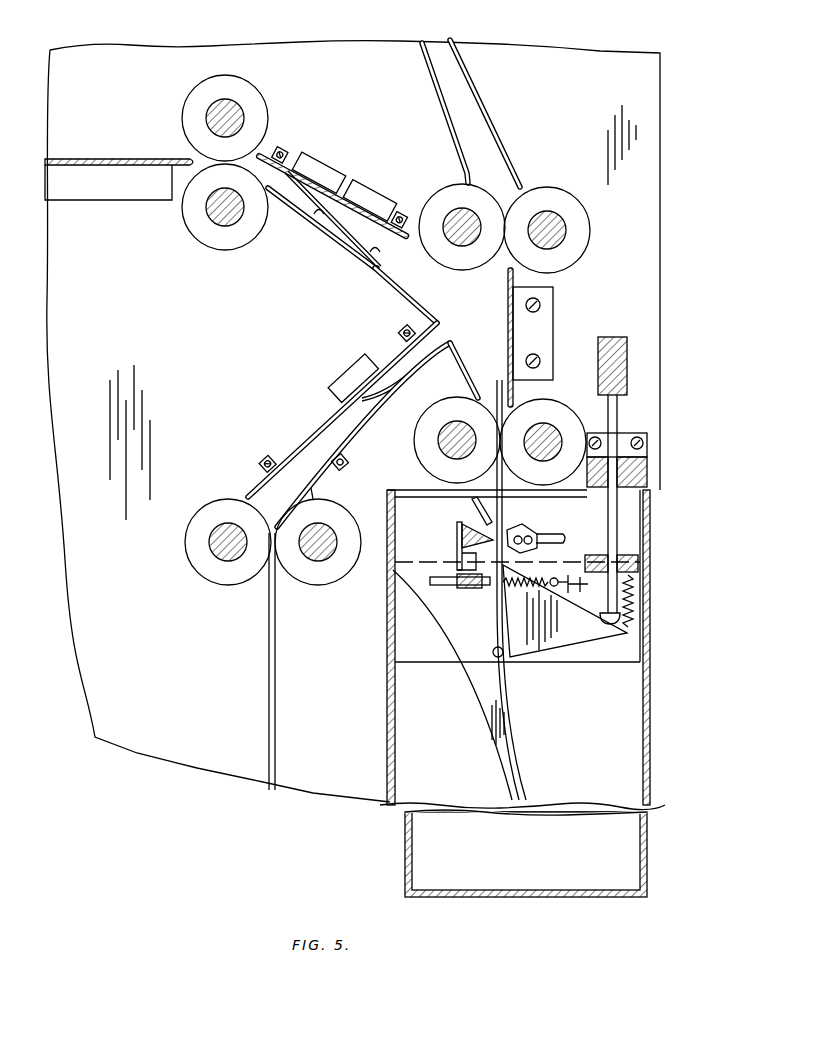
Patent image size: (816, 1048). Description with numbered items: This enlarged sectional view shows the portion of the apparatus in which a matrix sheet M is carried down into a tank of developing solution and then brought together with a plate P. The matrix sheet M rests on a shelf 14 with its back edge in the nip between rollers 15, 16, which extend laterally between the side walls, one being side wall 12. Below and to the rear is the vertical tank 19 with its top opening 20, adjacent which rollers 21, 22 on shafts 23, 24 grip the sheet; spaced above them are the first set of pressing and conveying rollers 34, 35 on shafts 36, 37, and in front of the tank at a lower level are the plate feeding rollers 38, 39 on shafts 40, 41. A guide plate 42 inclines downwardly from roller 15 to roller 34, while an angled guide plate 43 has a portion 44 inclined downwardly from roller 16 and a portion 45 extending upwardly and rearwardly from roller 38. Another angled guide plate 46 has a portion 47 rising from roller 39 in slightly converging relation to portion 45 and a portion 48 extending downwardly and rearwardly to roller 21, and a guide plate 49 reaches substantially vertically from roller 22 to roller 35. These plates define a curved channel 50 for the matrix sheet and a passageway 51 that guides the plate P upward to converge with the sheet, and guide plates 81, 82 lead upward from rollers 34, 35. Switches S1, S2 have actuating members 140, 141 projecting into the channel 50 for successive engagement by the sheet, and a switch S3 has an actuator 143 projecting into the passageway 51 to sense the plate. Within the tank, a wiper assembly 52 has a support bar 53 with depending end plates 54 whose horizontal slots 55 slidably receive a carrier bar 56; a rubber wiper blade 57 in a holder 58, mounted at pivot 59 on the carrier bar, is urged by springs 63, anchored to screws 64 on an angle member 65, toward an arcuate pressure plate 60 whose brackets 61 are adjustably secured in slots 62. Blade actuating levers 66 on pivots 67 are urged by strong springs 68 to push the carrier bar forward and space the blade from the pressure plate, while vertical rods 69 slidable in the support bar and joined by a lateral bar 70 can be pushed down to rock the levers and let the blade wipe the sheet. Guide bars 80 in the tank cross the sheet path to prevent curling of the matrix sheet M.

The side wall 12 is at (655, 192).
The shelf 14 is at (134, 160).
The roller 15 is at (237, 97).
The roller 16 is at (208, 244).
The switch S1 is at (321, 155).
The switch S2 is at (402, 210).
The switch S3 is at (354, 344).
The guide plate 42 is at (350, 164).
The actuating member 140 is at (318, 214).
The portion of angled guide plate 44 is at (346, 247).
The actuating member 141 is at (370, 256).
The channel or passage 50 is at (380, 274).
The shaft 36 is at (396, 276).
The angled guide plate 43 is at (402, 300).
The switch actuator 143 is at (385, 370).
The portion of angled guide plate 45 is at (329, 390).
The passageway 51 is at (289, 416).
The angled guide plate 46 is at (385, 424).
The portion of angled guide plate 47 is at (378, 432).
The portion of angled guide plate 48 is at (470, 375).
The guide plate 81 is at (448, 133).
The guide plate 82 is at (493, 130).
The pressing and conveying roller 34 is at (480, 200).
The pressing and conveying roller 35 is at (558, 216).
The shaft 37 is at (570, 229).
The guide plate 49 is at (520, 322).
The lateral bar 70 is at (622, 340).
The roller 21 is at (449, 431).
The shaft 23 is at (440, 440).
The roller 22 is at (549, 429).
The shaft 24 is at (556, 430).
The support bar 53 is at (650, 468).
The plate feeding roller 38 is at (215, 532).
The plate feeding roller 39 is at (322, 551).
The shaft 40 is at (210, 548).
The shaft 41 is at (318, 562).
The plate P is at (276, 640).
The tank opening 20 is at (410, 490).
The vertical tank 19 is at (632, 722).
The matrix sheet M is at (501, 520).
The pivot 67 is at (481, 665).
The guide bars 80 is at (490, 735).
The rubber wiper blade 57 is at (478, 522).
The holder 58 is at (455, 531).
The pivot 59 is at (457, 556).
The horizontal slots 55 is at (436, 578).
The carrier bar 56 is at (468, 588).
The pressure plate 60 is at (530, 533).
The brackets 61 is at (531, 545).
The horizontal slots 62 is at (565, 538).
The springs 63 is at (528, 586).
The anchor screws 64 is at (588, 590).
The wiper assembly 52 is at (635, 541).
The vertical rods 69 is at (640, 556).
The springs 68 is at (637, 612).
The angle member 65 is at (555, 618).
The blade actuating levers 66 is at (560, 625).
The end plates 54 is at (615, 660).